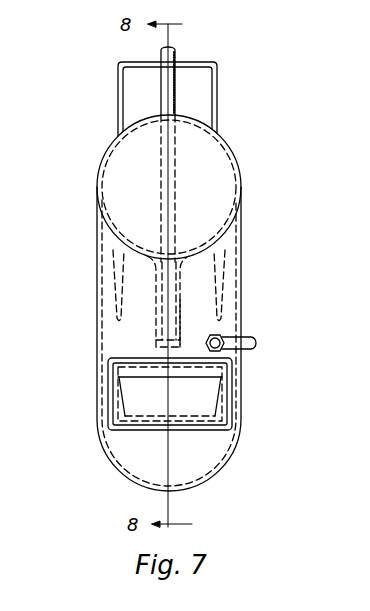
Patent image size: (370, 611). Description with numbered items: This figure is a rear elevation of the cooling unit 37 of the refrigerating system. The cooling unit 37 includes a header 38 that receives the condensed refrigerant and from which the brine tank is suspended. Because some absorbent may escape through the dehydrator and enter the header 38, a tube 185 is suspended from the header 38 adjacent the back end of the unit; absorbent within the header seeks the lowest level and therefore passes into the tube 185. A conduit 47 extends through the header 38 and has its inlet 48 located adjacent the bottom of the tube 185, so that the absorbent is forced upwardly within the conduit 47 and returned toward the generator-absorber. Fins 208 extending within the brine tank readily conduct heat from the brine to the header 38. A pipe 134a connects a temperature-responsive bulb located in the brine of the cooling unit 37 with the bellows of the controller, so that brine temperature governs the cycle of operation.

The cooling unit 37 is at (95, 124).
The header 38 is at (237, 156).
The conduit 47 is at (173, 54).
The inlet 48 is at (167, 340).
The tube 185 is at (180, 337).
The fins 208 is at (121, 280).
The pipe 134a is at (250, 336).